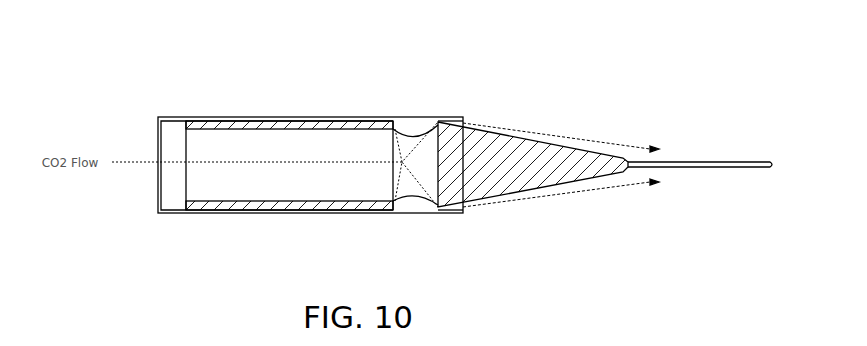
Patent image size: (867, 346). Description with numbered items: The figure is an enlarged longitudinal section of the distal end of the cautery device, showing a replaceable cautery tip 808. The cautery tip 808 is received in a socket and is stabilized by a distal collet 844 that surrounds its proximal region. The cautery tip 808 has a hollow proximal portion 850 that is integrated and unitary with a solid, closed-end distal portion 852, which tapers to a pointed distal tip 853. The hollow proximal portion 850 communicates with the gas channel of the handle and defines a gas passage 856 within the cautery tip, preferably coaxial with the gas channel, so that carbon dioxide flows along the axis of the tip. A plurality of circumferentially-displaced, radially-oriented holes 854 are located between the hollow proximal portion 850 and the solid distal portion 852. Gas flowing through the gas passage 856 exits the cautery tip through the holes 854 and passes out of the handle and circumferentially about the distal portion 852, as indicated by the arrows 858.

The cautery tip 808 is at (382, 115).
The distal collet 844 is at (212, 117).
The hollow proximal portion 850 is at (275, 122).
The solid distal portion 852 is at (540, 170).
The distal tip 853 is at (703, 167).
The holes 854 is at (418, 126).
The gas passage 856 is at (287, 175).
The arrows 858 is at (608, 142).